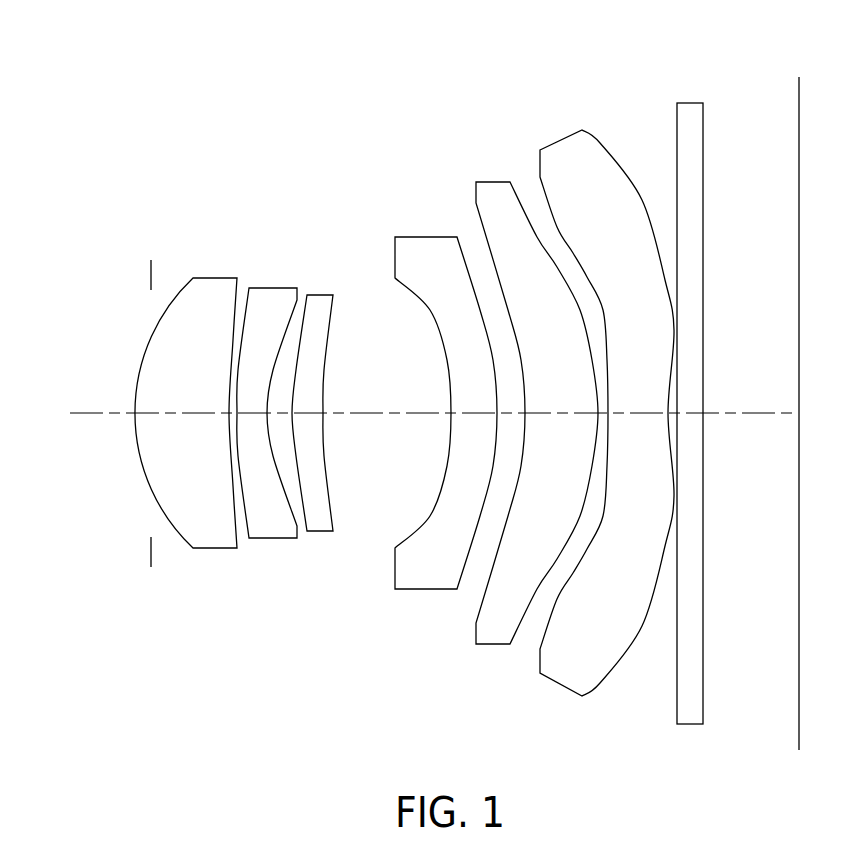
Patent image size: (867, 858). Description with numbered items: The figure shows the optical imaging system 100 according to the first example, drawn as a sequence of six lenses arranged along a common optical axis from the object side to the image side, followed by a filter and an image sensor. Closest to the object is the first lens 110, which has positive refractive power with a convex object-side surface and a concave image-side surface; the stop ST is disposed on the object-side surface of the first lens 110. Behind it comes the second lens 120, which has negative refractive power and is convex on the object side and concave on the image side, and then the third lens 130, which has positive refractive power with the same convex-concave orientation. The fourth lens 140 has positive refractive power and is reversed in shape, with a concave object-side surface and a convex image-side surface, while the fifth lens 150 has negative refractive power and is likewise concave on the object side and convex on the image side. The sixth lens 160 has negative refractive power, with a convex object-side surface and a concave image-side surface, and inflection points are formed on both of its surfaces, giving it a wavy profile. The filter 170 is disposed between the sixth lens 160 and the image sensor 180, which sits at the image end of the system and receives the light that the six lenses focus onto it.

The optical imaging system 100 is at (421, 87).
The stop ST is at (150, 275).
The first lens 110 is at (214, 278).
The second lens 120 is at (271, 288).
The third lens 130 is at (318, 295).
The fourth lens 140 is at (422, 237).
The fifth lens 150 is at (490, 182).
The sixth lens 160 is at (559, 141).
The filter 170 is at (688, 103).
The image sensor 180 is at (798, 101).